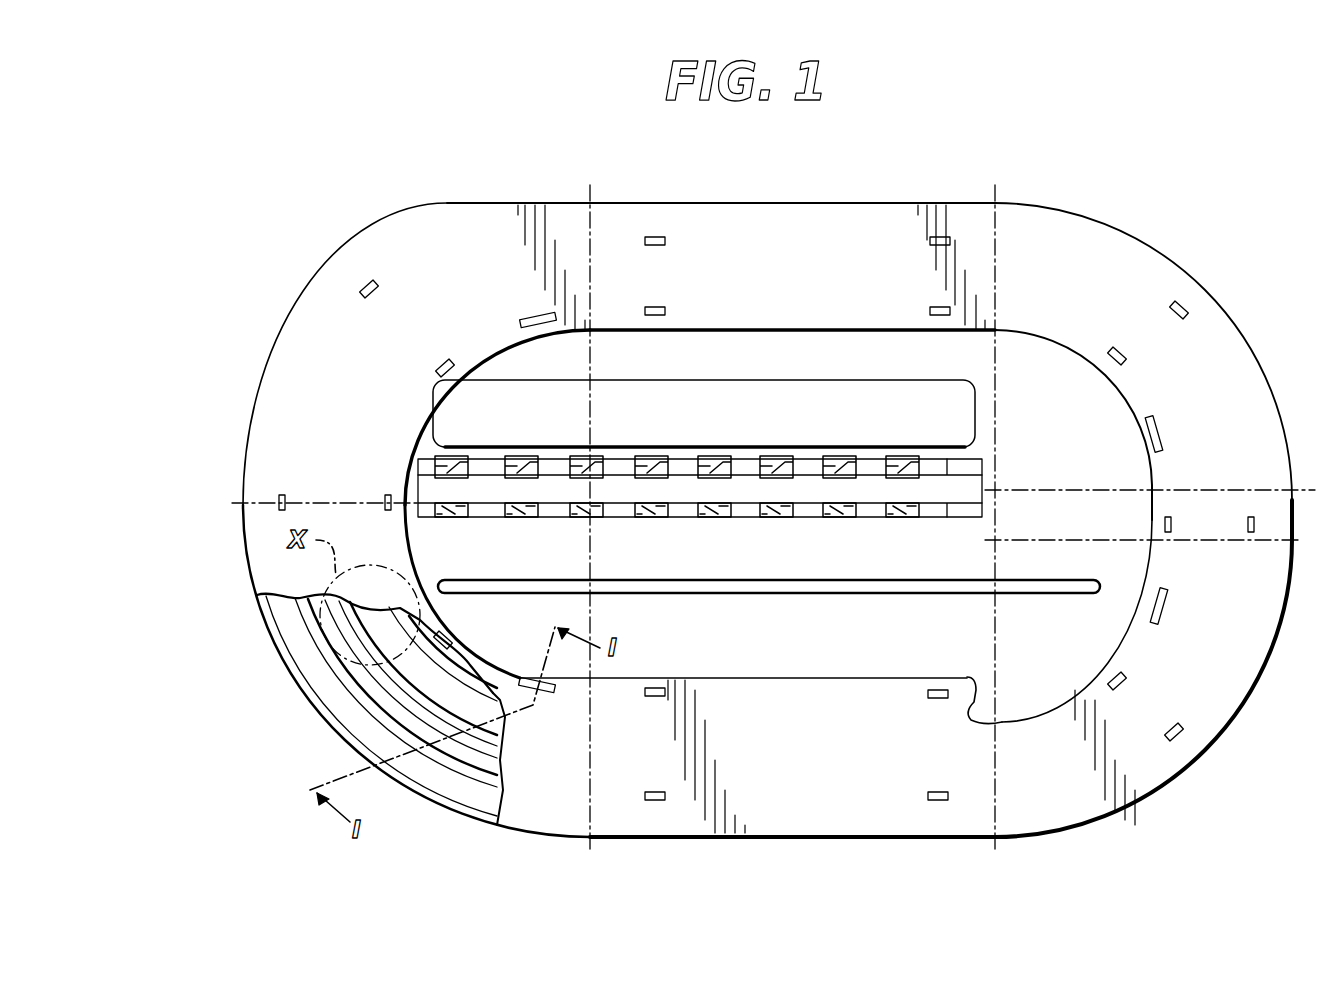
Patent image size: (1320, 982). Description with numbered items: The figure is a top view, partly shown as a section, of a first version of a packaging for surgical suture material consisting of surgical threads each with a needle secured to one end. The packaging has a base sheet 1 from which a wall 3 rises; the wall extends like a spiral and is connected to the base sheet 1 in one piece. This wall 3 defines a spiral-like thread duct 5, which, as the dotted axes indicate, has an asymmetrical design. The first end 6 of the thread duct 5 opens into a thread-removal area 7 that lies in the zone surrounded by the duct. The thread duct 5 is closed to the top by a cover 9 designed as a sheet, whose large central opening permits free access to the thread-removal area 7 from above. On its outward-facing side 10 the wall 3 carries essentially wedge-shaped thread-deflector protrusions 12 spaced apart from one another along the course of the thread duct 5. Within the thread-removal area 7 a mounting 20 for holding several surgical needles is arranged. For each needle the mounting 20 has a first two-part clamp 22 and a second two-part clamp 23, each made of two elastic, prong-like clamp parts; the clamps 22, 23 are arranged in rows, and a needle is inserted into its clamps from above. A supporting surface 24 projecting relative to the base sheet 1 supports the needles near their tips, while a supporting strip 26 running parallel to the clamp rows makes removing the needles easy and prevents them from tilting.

The base sheet 1 is at (778, 526).
The wall 3 is at (297, 688).
The thread duct 5 is at (273, 606).
The first end of the thread duct 6 is at (983, 690).
The thread-removal area 7 is at (743, 706).
The cover 9 is at (338, 282).
The outward-facing side of the wall 10 is at (340, 696).
The thread-deflector protrusions 12 is at (305, 643).
The mounting 20 is at (883, 528).
The first two-part clamp 22 is at (895, 456).
The second two-part clamp 23 is at (827, 518).
The supporting surface 24 is at (740, 402).
The supporting strip 26 is at (862, 594).